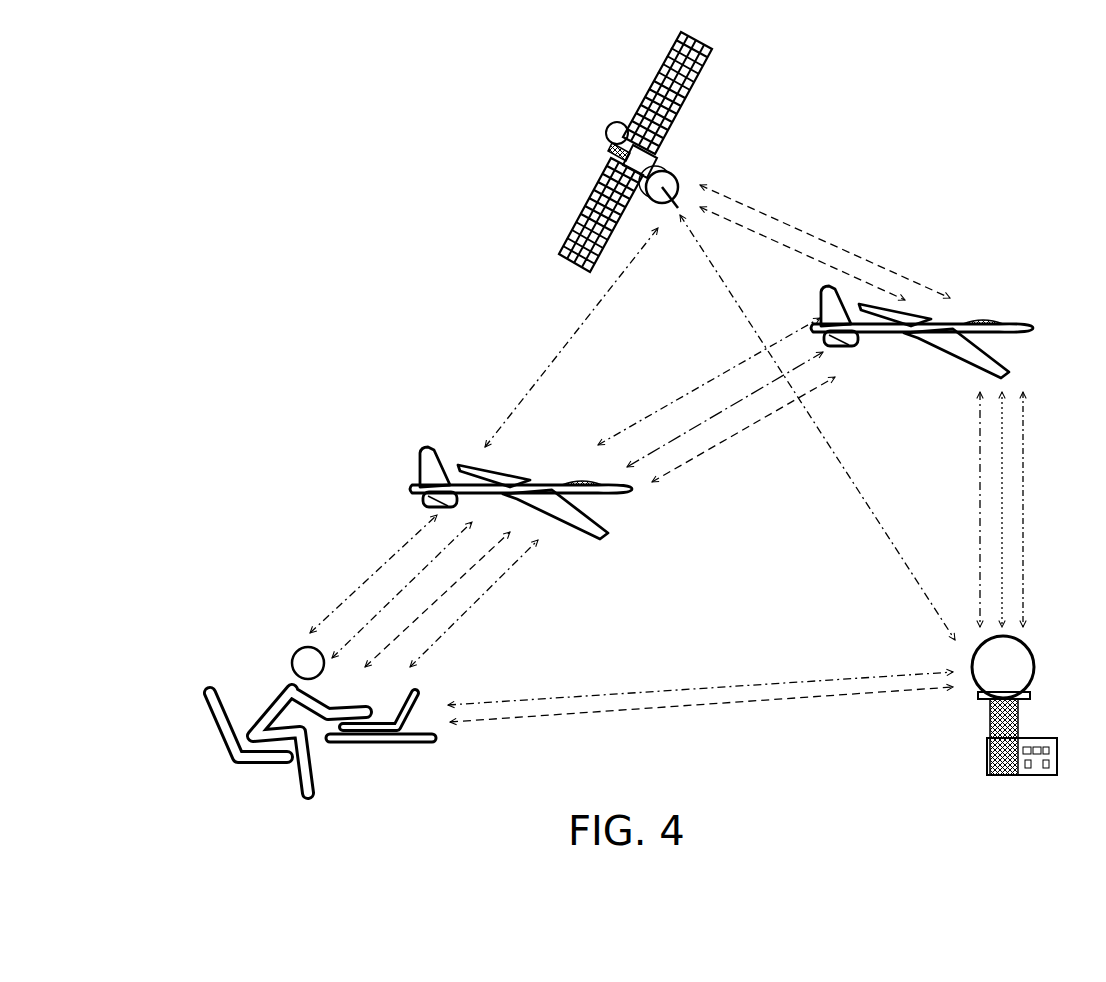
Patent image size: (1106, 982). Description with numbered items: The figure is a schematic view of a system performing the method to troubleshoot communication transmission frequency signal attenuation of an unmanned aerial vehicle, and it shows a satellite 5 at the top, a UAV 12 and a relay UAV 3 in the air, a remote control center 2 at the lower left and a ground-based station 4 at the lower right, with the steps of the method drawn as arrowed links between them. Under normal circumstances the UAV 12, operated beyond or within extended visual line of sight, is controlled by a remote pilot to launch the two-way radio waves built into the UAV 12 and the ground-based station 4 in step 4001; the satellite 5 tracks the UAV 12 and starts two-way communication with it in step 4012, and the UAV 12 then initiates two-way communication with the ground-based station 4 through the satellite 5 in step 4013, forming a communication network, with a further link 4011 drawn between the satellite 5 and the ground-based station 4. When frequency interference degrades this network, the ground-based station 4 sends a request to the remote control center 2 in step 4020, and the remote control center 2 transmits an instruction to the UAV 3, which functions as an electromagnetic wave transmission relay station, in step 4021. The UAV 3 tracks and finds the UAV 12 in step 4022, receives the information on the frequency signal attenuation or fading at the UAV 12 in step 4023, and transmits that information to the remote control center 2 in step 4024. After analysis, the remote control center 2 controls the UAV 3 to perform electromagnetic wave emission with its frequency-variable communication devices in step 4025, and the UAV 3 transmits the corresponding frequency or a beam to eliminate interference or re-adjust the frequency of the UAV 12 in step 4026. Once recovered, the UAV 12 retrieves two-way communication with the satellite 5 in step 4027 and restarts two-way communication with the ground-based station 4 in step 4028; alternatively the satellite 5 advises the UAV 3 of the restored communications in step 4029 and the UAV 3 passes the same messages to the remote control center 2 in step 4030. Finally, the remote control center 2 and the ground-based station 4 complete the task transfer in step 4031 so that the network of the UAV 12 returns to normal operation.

The remote control center 2 is at (420, 695).
The UAV 3 is at (417, 450).
The ground-based station 4 is at (1046, 738).
The satellite 5 is at (697, 97).
The UAV 12 is at (977, 317).
The step of launching two-way radio waves 4001 is at (1002, 448).
The communication link between satellite and ground station 4011 is at (838, 455).
The step of satellite tracking and two-way communication 4012 is at (757, 250).
The step of initiating two-way communication with ground-based station through satel 4013 is at (980, 472).
The step of sending a recovery request 4020 is at (715, 685).
The step of transmitting an instruction to the relay UAV 4021 is at (457, 656).
The step of tracking and finding the UAV 4022 is at (765, 420).
The step of receiving attenuation information 4023 is at (702, 425).
The step of transmitting information to the remote control center 4024 is at (393, 636).
The step of controlling electromagnetic wave emission 4025 is at (412, 578).
The step of performing the recovery process 4026 is at (635, 420).
The step of retrieving two-way communication with the satellite 4027 is at (812, 220).
The step of restarting two-way communication with the ground-based station 4028 is at (1022, 510).
The step of advising the relay UAV of restored communications 4029 is at (571, 337).
The step of passing restoration messages to the remote control center 4030 is at (360, 578).
The step of completing the task transfer 4031 is at (815, 700).